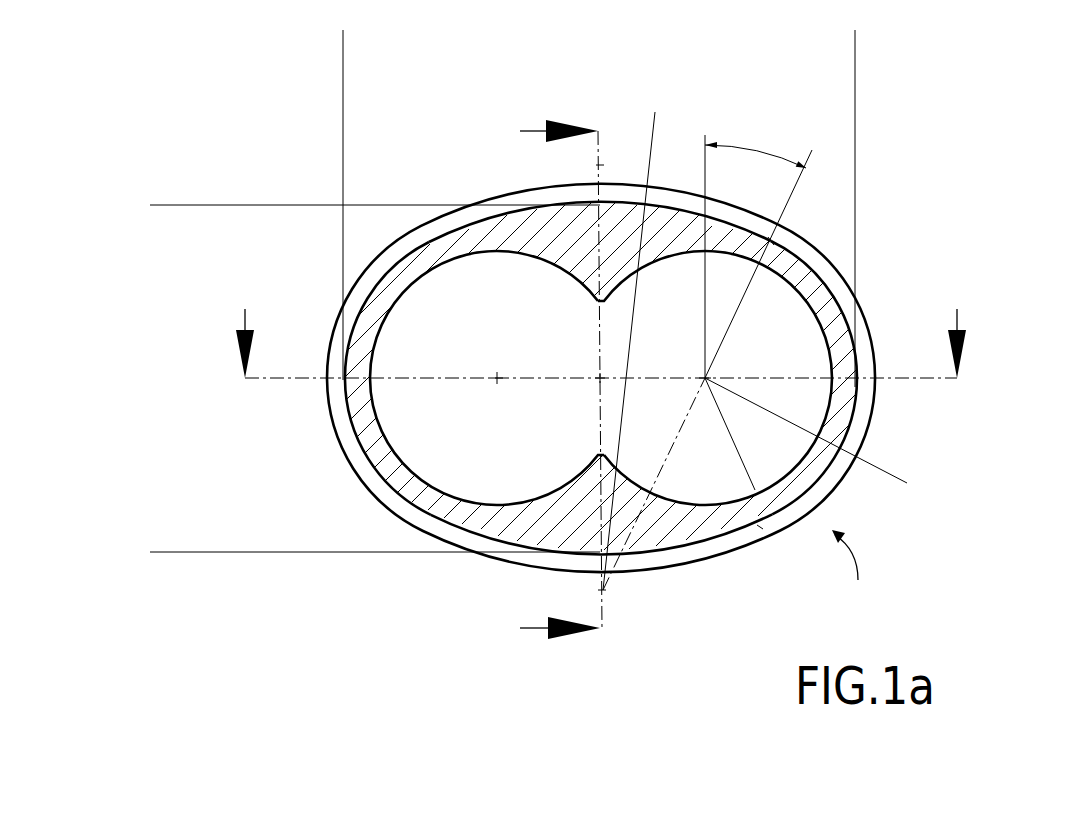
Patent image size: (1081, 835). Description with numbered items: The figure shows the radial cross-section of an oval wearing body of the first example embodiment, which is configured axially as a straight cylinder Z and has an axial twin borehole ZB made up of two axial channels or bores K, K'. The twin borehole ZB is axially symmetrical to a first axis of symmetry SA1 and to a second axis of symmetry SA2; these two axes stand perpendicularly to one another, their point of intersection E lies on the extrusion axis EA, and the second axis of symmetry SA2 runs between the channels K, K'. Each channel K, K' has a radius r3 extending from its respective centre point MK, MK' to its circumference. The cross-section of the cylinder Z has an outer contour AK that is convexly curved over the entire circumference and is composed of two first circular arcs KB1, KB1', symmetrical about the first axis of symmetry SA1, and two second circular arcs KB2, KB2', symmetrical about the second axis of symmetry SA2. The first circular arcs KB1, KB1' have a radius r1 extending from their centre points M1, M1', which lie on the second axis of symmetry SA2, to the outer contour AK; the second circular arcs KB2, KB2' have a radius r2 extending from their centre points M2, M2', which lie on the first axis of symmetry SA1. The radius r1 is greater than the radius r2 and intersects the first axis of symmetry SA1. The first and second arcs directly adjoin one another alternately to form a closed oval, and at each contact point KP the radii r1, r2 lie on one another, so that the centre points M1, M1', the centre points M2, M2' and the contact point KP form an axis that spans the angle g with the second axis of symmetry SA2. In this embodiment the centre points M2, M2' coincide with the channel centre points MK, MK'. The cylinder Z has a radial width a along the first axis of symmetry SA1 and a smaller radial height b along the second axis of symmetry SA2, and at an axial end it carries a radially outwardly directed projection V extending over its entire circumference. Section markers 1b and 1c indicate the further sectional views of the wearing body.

The radial width a is at (855, 35).
The radial height b is at (155, 205).
The section line 1b is at (543, 378).
The section line 1c is at (600, 329).
The outer contour AK is at (417, 248).
The first circular arc KB1 is at (590, 182).
The first circular arc KB1' is at (595, 574).
The second circular arc KB2 is at (859, 374).
The second circular arc KB2' is at (344, 378).
The channel K is at (784, 378).
The channel K' is at (452, 397).
The twin borehole ZB is at (384, 413).
The point of intersection E is at (598, 378).
The extrusion axis EA is at (598, 378).
The centre point of channel MK is at (672, 257).
The centre point of second circular arc M2 is at (674, 360).
The centre point of channel MK' is at (457, 361).
The centre point of second circular arc M2' is at (460, 359).
The centre point of first circular arc M1 is at (651, 616).
The centre point of first circular arc M1' is at (615, 113).
The radius of first circular arcs r1 is at (629, 348).
The radius of second circular arcs r2 is at (806, 437).
The radius of channels r3 is at (730, 434).
The angle g is at (707, 353).
The contact point KP is at (777, 247).
The projection V is at (760, 527).
The cylinder Z is at (856, 578).
The first axis of symmetry SA1 is at (922, 382).
The second axis of symmetry SA2 is at (603, 592).